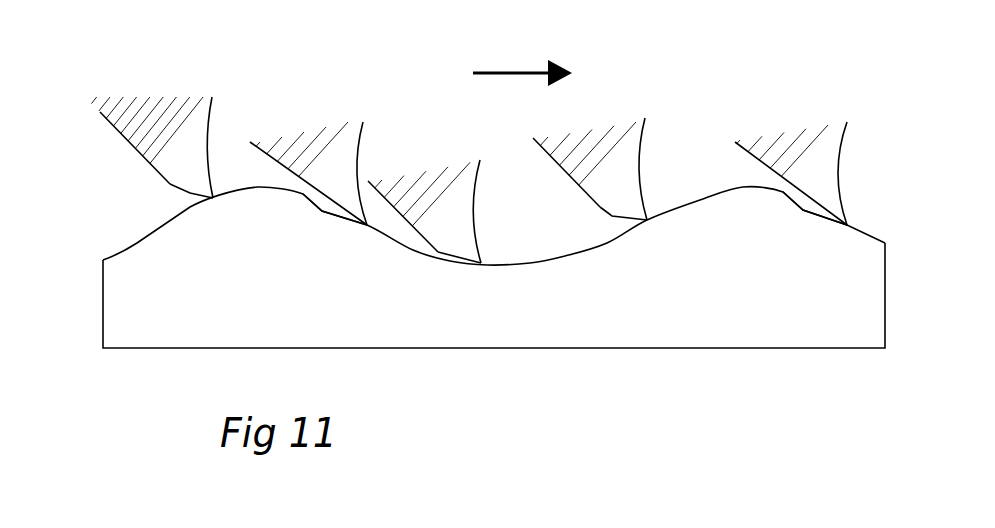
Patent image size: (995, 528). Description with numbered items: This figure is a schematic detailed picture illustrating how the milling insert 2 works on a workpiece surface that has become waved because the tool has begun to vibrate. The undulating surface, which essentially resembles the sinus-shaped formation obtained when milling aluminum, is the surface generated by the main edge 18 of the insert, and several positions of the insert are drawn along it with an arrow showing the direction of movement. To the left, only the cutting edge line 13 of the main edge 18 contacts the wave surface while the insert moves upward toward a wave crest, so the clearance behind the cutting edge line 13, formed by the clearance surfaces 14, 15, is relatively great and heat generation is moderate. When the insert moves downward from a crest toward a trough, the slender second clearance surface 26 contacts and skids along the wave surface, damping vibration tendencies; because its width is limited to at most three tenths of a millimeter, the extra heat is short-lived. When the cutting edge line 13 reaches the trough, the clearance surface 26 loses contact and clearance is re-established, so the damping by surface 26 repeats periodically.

The patterned article / substrate with surface structures 2 is at (327, 107).
The cutting edge line 13 is at (213, 198).
The front face of protrusion 14 is at (478, 217).
The back face of protrusion 15 is at (149, 163).
The main edge 18 is at (214, 185).
The second clearance surface 26 is at (191, 190).